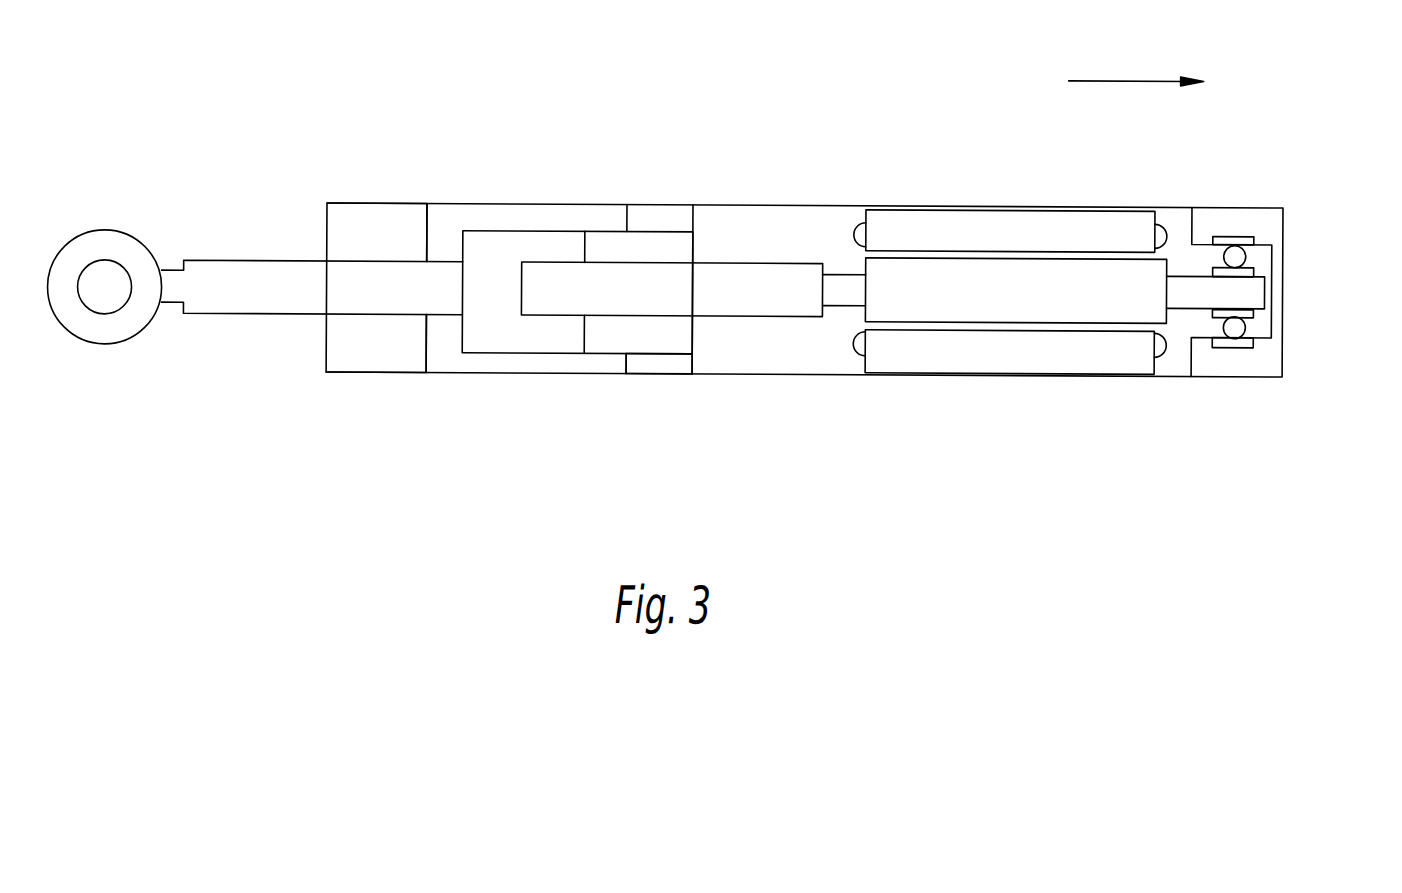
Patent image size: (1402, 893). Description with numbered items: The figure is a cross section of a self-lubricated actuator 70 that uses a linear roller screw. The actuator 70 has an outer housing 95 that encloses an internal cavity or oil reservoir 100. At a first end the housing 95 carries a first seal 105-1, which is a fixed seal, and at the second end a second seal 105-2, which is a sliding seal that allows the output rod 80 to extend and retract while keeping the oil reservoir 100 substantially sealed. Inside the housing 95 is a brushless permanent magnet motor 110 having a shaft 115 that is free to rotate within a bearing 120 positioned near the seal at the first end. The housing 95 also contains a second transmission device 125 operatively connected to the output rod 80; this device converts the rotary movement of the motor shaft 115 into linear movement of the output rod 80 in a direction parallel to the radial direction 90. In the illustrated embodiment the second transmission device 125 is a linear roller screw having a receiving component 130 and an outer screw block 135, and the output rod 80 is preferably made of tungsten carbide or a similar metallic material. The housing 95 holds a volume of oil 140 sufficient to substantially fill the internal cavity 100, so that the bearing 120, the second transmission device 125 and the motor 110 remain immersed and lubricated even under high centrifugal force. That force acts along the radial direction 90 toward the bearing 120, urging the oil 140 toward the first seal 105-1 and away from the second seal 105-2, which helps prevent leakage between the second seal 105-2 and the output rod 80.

The actuator 70 is at (266, 144).
The output rod 80 is at (230, 288).
The radial direction 90 is at (1142, 76).
The outer housing 95 is at (790, 373).
The internal cavity 100 is at (747, 226).
The first seal 105-1 is at (1267, 355).
The second seal 105-2 is at (375, 225).
The brushless permanent magnet motor 110 is at (1049, 317).
The shaft 115 is at (848, 293).
The bearing 120 is at (1234, 250).
The second transmission device 125 is at (616, 292).
The receiving component 130 is at (630, 245).
The outer screw block 135 is at (663, 362).
The oil 140 is at (443, 227).